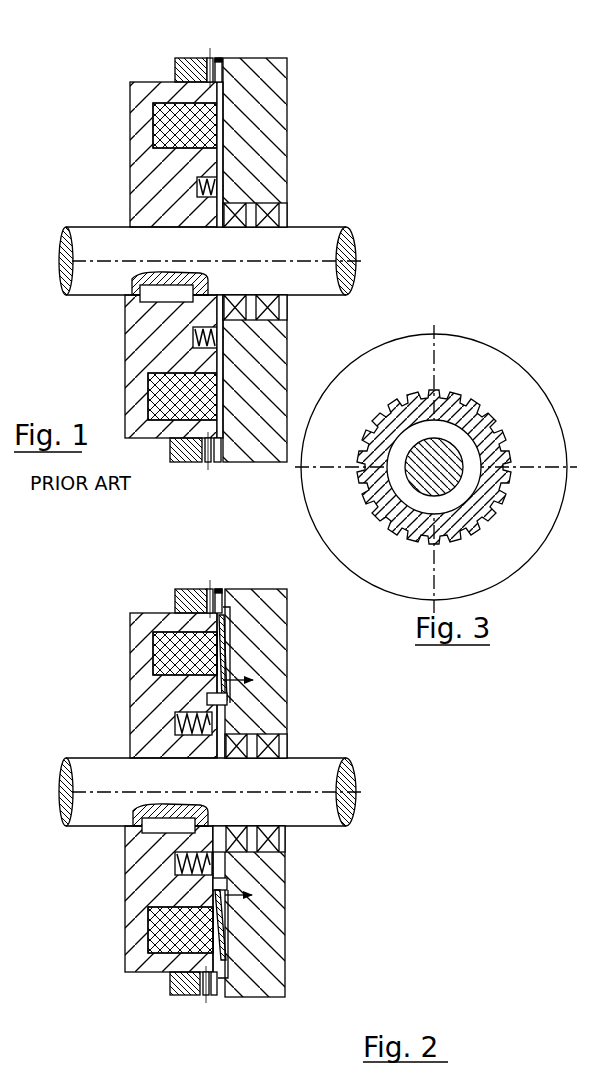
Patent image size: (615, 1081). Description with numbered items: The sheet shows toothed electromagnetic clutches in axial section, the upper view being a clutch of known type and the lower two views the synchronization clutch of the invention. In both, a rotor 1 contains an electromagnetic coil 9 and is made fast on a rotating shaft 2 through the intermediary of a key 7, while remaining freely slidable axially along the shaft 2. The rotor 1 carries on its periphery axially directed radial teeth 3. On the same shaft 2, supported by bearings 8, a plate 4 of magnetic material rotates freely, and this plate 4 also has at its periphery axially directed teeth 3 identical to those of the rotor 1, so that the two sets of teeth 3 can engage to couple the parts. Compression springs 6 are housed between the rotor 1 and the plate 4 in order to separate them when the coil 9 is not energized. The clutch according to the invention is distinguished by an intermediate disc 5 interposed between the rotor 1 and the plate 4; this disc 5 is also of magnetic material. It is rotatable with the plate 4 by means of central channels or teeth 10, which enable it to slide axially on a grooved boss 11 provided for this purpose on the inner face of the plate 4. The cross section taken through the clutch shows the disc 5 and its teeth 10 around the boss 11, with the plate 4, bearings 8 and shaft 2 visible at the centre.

In FIG. 1, the rotor 1 is at (152, 177).
In FIG. 2, the rotor 1 is at (140, 662).
In FIG. 1, the rotating shaft 2 is at (118, 282).
In FIG. 2, the rotating shaft 2 is at (98, 812).
In FIG. 3, the rotating shaft 2 is at (417, 475).
In FIG. 1, the teeth 3 is at (210, 58).
In FIG. 2, the teeth 3 is at (210, 589).
In FIG. 1, the plate 4 is at (272, 167).
In FIG. 2, the plate 4 is at (273, 668).
In FIG. 3, the plate 4 is at (377, 485).
In FIG. 2, the intermediate disc 5 is at (225, 918).
In FIG. 3, the intermediate disc 5 is at (450, 363).
In FIG. 1, the compression springs 6 is at (226, 188).
In FIG. 2, the compression springs 6 is at (173, 868).
In FIG. 1, the key 7 is at (171, 298).
In FIG. 2, the key 7 is at (170, 818).
In FIG. 1, the bearings 8 is at (274, 213).
In FIG. 2, the bearings 8 is at (277, 743).
In FIG. 3, the bearings 8 is at (403, 490).
In FIG. 1, the electromagnetic coil 9 is at (165, 122).
In FIG. 2, the electromagnetic coil 9 is at (167, 925).
In FIG. 2, the central channels or teeth 10 is at (224, 703).
In FIG. 3, the central channels or teeth 10 is at (408, 537).
In FIG. 2, the grooved boss 11 is at (218, 868).